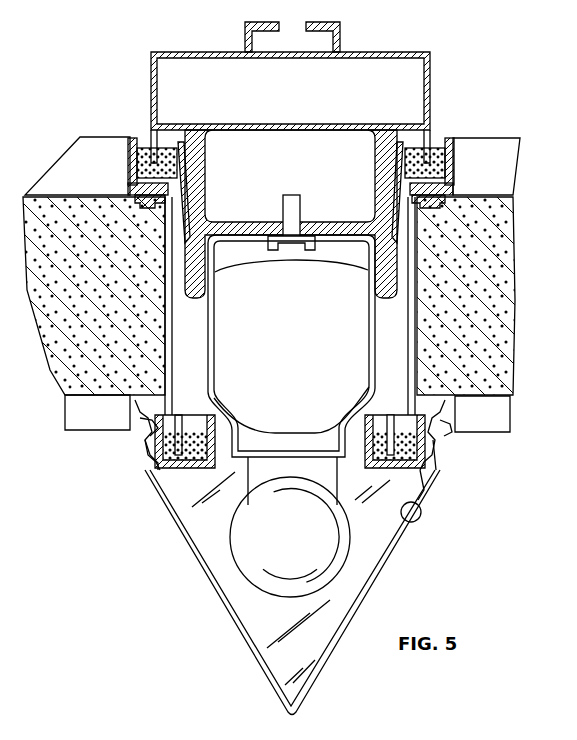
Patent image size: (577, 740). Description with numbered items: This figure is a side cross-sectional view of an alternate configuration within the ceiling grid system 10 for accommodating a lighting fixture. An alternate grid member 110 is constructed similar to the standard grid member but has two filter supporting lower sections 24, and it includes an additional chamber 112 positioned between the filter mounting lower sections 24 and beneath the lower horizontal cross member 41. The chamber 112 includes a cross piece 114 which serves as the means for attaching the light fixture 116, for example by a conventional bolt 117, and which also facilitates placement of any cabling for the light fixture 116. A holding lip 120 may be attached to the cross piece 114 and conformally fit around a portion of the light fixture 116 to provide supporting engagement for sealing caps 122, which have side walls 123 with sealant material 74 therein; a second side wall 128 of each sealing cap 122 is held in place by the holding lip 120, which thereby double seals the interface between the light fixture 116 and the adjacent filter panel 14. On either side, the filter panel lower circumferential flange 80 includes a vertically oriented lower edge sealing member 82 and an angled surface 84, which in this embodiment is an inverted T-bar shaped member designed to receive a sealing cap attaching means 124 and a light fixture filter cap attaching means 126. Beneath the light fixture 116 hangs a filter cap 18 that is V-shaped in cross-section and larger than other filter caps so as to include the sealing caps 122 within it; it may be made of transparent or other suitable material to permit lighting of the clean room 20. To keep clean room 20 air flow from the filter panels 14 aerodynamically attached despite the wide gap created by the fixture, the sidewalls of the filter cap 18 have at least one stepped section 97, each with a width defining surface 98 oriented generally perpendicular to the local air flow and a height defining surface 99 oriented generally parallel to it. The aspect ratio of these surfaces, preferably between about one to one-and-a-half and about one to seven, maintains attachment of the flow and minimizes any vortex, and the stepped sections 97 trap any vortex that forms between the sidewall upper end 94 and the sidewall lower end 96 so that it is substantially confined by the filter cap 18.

The ceiling grid system 10 is at (162, 29).
The alternate grid member 110 is at (432, 72).
The lower horizontal cross member 41 is at (283, 126).
The filter mounting lower section 24 is at (199, 167).
The chamber 112 is at (298, 161).
The cross piece 114 is at (318, 221).
The bolt 117 is at (306, 247).
The filter panel 14 is at (100, 183).
The sealing cap attaching means 124 is at (424, 432).
The holding lip 120 is at (210, 341).
The light fixture 116 is at (271, 452).
The filter panel lower circumferential flange 80 is at (150, 406).
The lower edge sealing member 82 is at (183, 407).
The sealing cap 122 is at (180, 469).
The second side wall 128 is at (367, 455).
The sidewall upper end 94 is at (457, 413).
The light fixture filter cap attaching means 126 is at (448, 421).
The side wall 123 is at (426, 433).
The width defining surface 98 is at (426, 440).
The stepped section 97 is at (421, 486).
The height defining surface 99 is at (417, 519).
The angled surface 84 is at (148, 428).
The sealant material 74 is at (158, 453).
The filter cap 18 is at (207, 572).
The sidewall lower end 96 is at (300, 712).
The clean room 20 is at (103, 672).